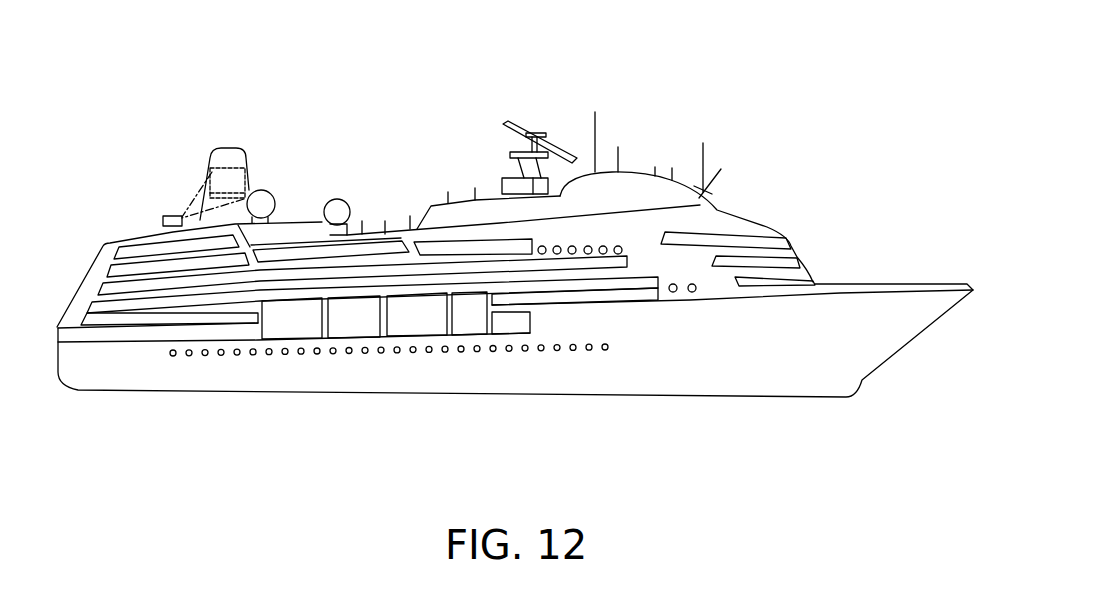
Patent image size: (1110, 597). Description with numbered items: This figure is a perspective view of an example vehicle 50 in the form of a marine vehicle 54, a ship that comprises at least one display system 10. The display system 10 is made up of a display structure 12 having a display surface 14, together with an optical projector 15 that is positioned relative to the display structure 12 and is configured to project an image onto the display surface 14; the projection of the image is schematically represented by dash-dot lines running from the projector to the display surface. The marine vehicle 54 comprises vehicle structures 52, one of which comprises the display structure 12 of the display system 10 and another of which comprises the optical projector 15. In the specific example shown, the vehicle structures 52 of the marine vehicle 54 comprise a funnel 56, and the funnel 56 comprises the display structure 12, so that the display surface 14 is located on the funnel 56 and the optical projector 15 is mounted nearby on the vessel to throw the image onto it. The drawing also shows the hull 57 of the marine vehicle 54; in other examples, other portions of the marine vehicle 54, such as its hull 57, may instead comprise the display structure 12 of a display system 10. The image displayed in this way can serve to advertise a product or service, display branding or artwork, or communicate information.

The display system 10 is at (145, 206).
The display structure 12 is at (208, 171).
The display surface 14 is at (229, 183).
The optical projector 15 is at (181, 216).
The vehicle 50 is at (851, 54).
The vehicle structures 52 is at (683, 73).
The marine vehicle 54 is at (766, 62).
The funnel 56 is at (263, 171).
The hull 57 is at (683, 349).